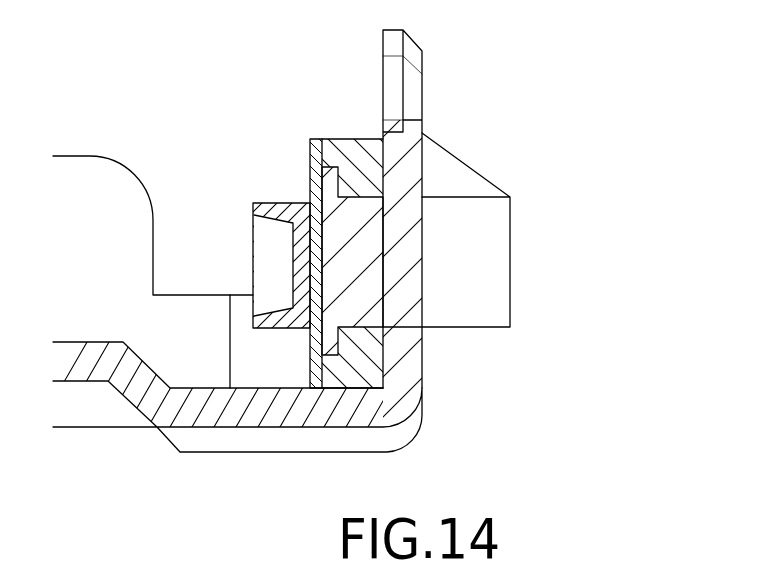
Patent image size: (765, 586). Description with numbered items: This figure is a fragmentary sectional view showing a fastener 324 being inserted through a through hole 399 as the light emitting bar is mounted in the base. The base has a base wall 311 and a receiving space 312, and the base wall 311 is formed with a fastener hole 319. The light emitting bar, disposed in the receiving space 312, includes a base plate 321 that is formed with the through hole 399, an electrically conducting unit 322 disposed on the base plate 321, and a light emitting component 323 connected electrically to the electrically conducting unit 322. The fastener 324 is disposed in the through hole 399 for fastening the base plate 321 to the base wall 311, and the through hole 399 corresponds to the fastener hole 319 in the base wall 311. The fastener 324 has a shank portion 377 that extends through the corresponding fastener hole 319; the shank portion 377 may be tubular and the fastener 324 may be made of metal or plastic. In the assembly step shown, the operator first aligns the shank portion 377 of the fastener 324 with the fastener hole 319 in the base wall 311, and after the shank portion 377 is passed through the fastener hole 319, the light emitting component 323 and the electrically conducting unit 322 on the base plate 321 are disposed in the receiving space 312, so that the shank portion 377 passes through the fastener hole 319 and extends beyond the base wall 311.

The base wall 311 is at (413, 390).
The receiving space 312 is at (253, 363).
The fastener hole 319 is at (405, 220).
The base plate 321 is at (343, 147).
The electrically conducting unit 322 is at (309, 157).
The light emitting component 323 is at (273, 203).
The fastener 324 is at (556, 242).
The shank portion 377 is at (490, 305).
The through hole 399 is at (355, 327).